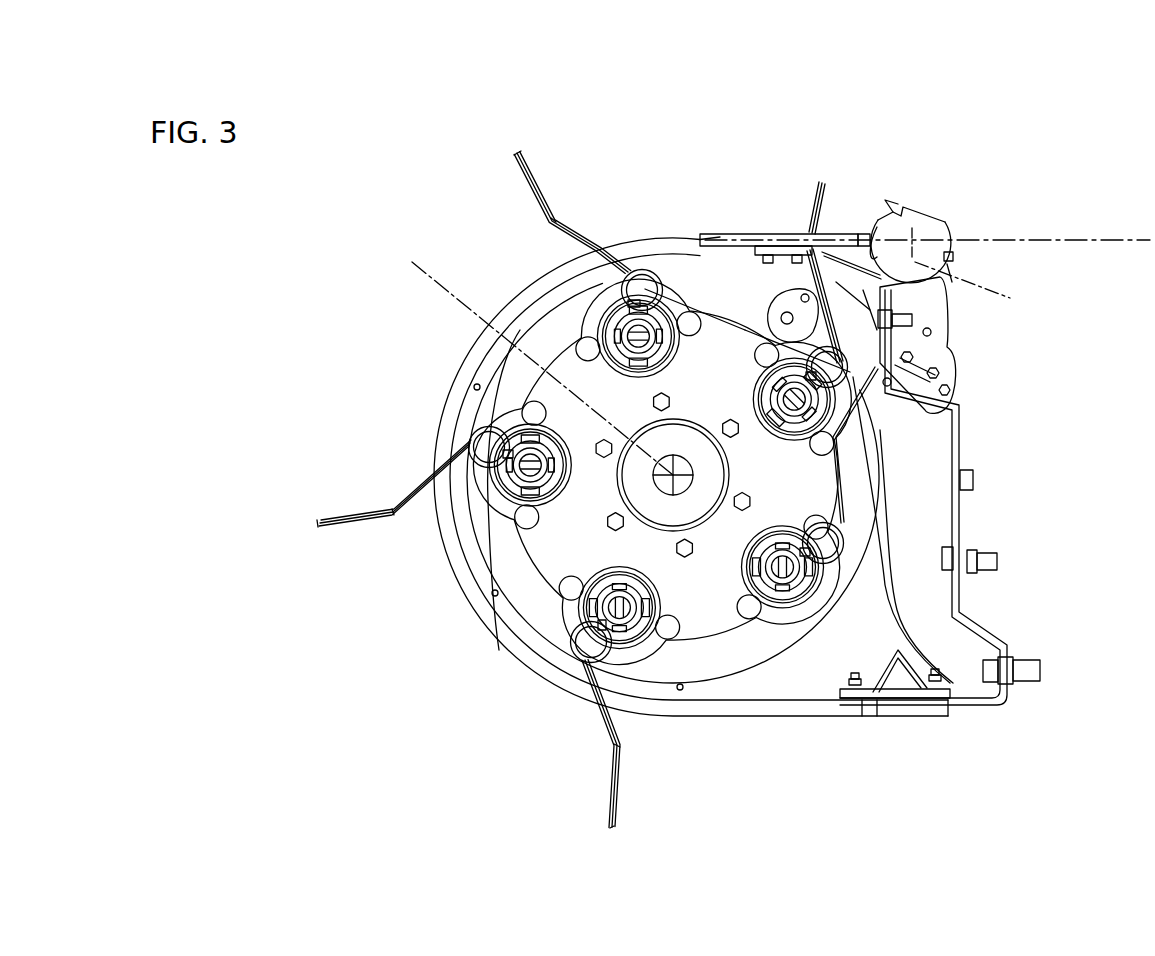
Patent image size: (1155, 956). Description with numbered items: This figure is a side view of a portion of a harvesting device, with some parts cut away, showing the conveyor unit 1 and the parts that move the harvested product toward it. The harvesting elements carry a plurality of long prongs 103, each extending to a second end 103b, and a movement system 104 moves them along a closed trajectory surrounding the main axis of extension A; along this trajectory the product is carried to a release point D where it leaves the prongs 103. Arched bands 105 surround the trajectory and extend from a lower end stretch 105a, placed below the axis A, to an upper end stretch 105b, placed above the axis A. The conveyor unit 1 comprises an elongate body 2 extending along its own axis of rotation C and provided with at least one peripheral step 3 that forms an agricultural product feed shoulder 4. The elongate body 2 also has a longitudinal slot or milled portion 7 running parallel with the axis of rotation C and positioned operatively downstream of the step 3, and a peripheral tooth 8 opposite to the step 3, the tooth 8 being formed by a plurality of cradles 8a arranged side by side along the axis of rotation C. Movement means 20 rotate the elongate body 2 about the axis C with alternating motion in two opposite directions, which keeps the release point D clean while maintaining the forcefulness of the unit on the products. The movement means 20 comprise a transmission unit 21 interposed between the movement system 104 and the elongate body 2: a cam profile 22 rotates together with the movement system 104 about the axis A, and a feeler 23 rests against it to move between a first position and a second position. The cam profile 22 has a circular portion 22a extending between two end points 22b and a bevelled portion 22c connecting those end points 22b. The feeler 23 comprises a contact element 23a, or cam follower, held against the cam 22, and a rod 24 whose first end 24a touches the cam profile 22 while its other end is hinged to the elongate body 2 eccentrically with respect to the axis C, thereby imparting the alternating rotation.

The conveyor unit 1 is at (950, 227).
The elongate body 2 is at (943, 197).
The peripheral step 3 is at (875, 237).
The agricultural product feed shoulder 4 is at (953, 283).
The longitudinal slot or milled portion 7 is at (903, 212).
The peripheral tooth 8 is at (958, 258).
The cradles 8a is at (950, 257).
The movement means 20 is at (528, 565).
The transmission unit 21 is at (733, 300).
The cam profile 22 is at (558, 363).
The circular portion 22a is at (517, 545).
The end points 22b is at (614, 264).
The bevelled portion 22c is at (663, 262).
The feeler 23 is at (778, 262).
The contact element 23a is at (780, 262).
The rod 24 is at (812, 233).
The first end 24a is at (780, 233).
The long prongs 103 is at (545, 193).
The second end 103b is at (526, 152).
The movement system 104 is at (499, 650).
The bands 105 is at (447, 373).
The lower end stretch 105a is at (888, 712).
The upper end stretch 105b is at (718, 235).
The main axis of extension A is at (537, 356).
The axis of rotation C is at (971, 285).
The release point D is at (847, 230).